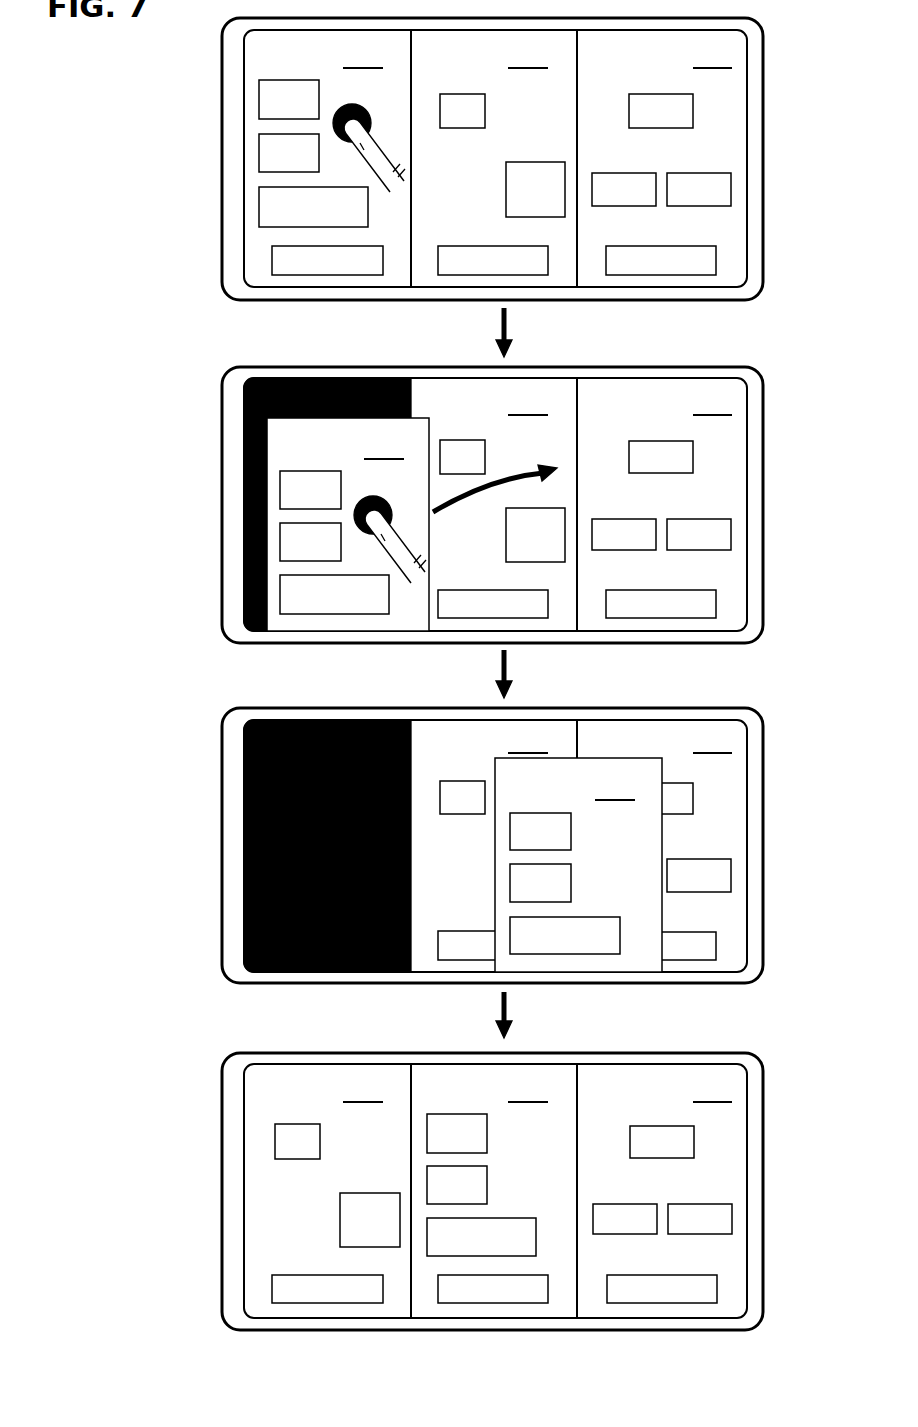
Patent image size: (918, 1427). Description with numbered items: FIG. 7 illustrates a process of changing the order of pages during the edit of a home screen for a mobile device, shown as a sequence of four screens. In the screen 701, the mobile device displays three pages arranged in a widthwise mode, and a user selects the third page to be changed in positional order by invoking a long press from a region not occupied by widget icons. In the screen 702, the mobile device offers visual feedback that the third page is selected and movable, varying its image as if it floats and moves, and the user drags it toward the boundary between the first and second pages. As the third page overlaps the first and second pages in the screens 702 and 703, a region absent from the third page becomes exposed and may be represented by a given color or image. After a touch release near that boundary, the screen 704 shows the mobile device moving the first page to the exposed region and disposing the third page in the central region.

The screen 701 is at (527, 159).
The screen 702 is at (527, 505).
The screen 703 is at (527, 845).
The screen 704 is at (527, 1191).